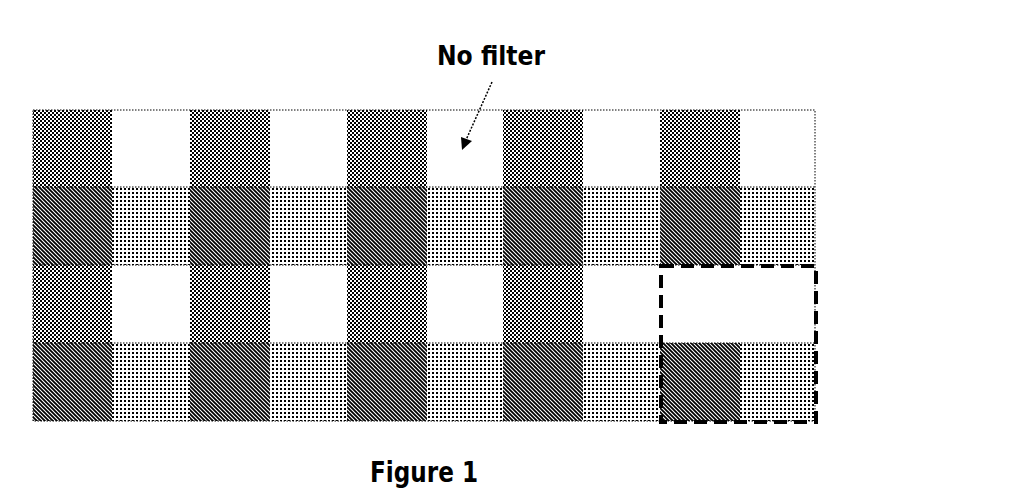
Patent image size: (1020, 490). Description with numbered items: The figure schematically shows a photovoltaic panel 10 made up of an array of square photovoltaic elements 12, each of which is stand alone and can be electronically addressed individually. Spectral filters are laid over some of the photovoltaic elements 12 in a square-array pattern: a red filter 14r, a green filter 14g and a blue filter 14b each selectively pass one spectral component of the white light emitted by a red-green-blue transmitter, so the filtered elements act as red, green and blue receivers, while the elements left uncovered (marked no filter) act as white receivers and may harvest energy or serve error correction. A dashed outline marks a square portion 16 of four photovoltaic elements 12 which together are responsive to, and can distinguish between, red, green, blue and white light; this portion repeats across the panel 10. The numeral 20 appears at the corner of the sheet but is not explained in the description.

The photovoltaic panel 10 is at (716, 78).
The photovoltaic element 12 is at (768, 152).
The blue filter 14b is at (100, 125).
The green filter 14g is at (166, 192).
The red filter 14r is at (262, 197).
The square portion 16 is at (817, 292).
The image sensor 20 is at (865, 477).